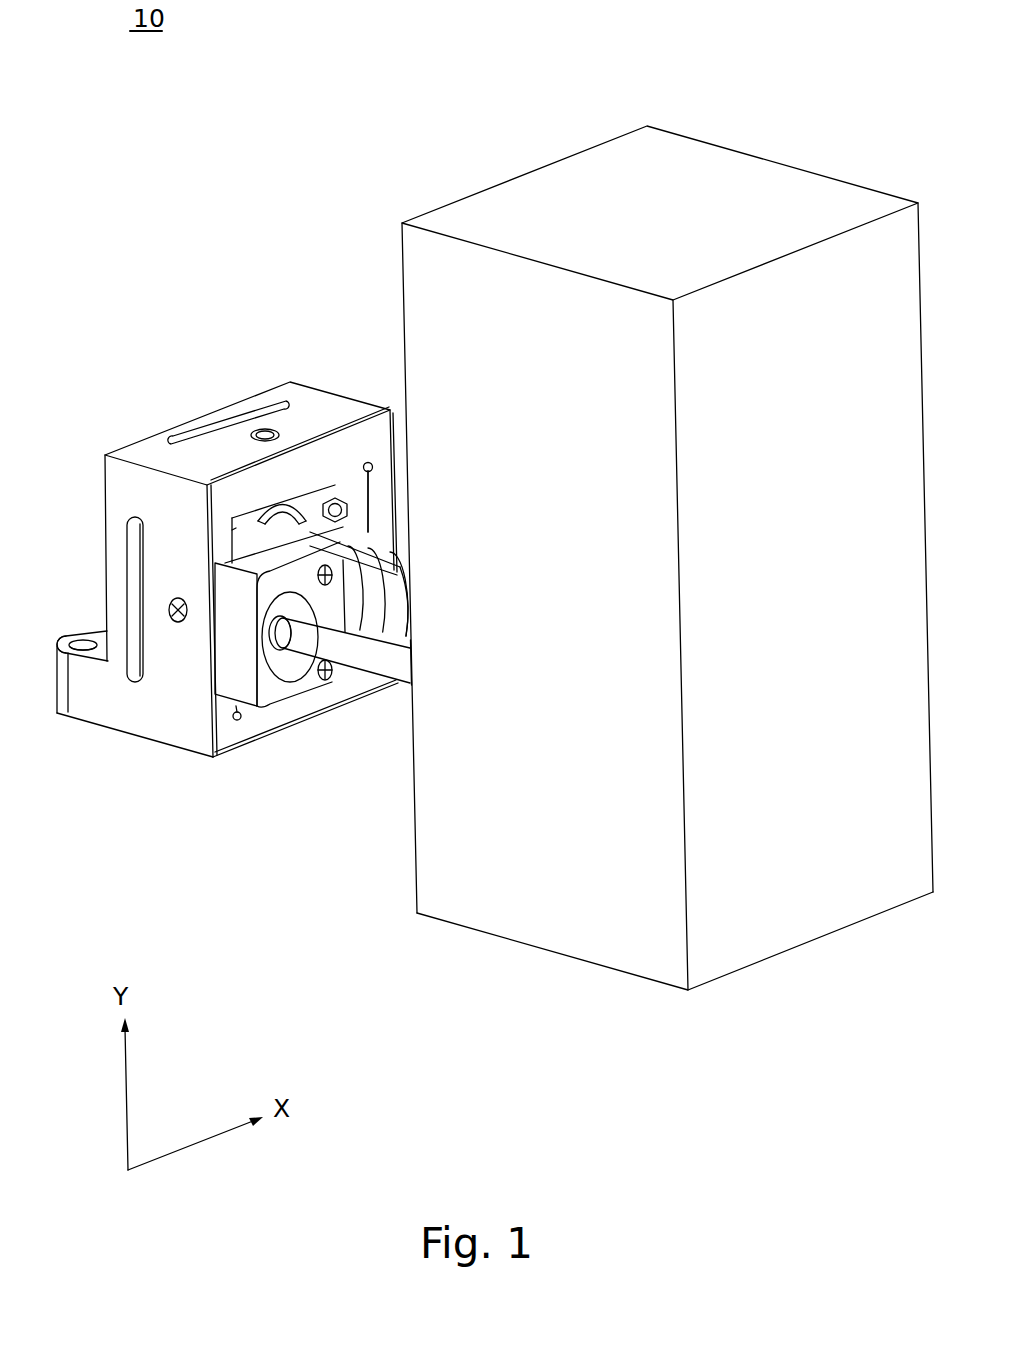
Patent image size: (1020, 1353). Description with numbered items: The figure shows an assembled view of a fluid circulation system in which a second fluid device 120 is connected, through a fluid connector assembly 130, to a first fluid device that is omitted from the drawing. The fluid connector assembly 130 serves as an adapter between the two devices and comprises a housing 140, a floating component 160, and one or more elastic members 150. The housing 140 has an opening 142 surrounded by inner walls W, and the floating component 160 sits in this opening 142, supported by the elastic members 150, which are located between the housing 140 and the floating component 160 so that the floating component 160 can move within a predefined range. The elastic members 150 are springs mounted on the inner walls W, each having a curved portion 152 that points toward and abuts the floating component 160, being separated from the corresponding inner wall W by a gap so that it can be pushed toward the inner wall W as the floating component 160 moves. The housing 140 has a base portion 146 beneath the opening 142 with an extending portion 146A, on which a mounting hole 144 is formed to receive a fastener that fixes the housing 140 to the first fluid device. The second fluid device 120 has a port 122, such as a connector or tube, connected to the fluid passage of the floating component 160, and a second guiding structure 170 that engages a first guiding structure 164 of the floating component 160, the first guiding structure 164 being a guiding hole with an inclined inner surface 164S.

The second fluid device 120 is at (545, 928).
The port 122 is at (407, 623).
The fluid connector assembly 130 is at (108, 396).
The housing 140 is at (105, 482).
The opening 142 is at (228, 551).
The mounting hole 144 is at (88, 628).
The base portion 146 is at (153, 738).
The extending portion 146A is at (58, 672).
The elastic member 150 is at (318, 495).
The curved portion 152 is at (297, 510).
The floating component 160 is at (250, 528).
The first guiding structure 164 is at (304, 700).
The inclined inner surface 164S is at (272, 665).
The second guiding structure 170 is at (372, 670).
The inner walls W is at (355, 500).